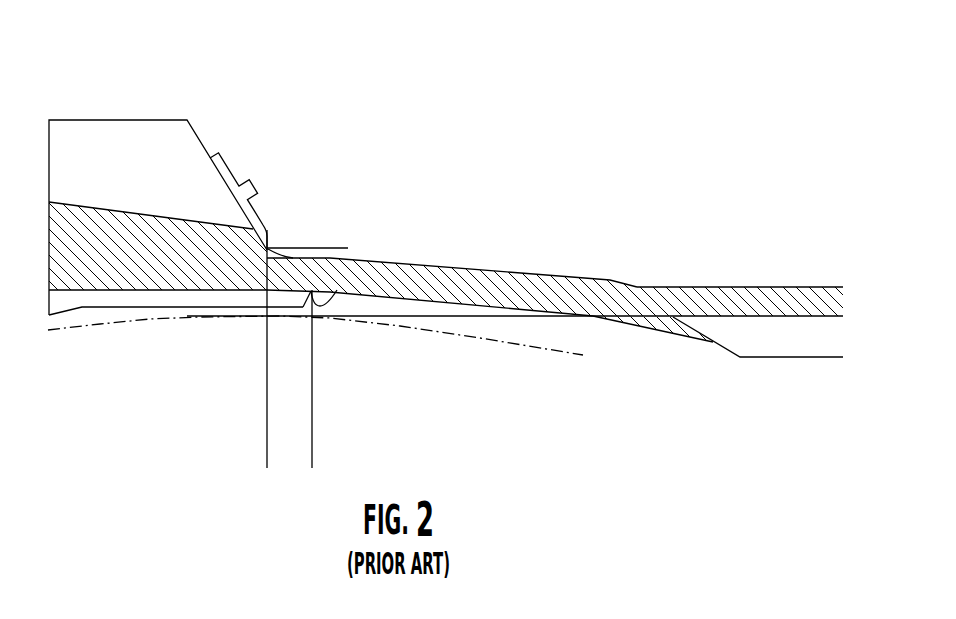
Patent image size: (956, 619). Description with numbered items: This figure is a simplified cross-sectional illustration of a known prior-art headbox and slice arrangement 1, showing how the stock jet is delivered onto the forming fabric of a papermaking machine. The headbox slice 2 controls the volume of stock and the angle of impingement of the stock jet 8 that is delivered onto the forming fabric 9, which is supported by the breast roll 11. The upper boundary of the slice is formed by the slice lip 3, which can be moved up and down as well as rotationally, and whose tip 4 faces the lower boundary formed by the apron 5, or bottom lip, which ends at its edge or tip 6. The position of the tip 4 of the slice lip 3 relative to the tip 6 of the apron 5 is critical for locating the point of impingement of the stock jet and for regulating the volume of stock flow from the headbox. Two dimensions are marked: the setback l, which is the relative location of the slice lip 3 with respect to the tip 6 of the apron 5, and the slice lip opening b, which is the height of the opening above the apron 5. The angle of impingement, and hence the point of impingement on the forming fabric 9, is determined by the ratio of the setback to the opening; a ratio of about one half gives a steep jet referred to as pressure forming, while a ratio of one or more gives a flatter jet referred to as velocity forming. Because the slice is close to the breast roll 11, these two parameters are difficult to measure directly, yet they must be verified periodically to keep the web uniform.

The coating device 1 is at (196, 100).
The headbox slice 2 is at (291, 216).
The slice lip 3 is at (266, 224).
The tip of the slice lip 4 is at (268, 250).
The apron 5 is at (195, 298).
The tip of the apron 6 is at (337, 290).
The stock jet 8 is at (493, 268).
The forming fabric 9 is at (818, 295).
The breast roll 11 is at (128, 322).
The slice lip opening b is at (343, 320).
The setback l is at (238, 461).